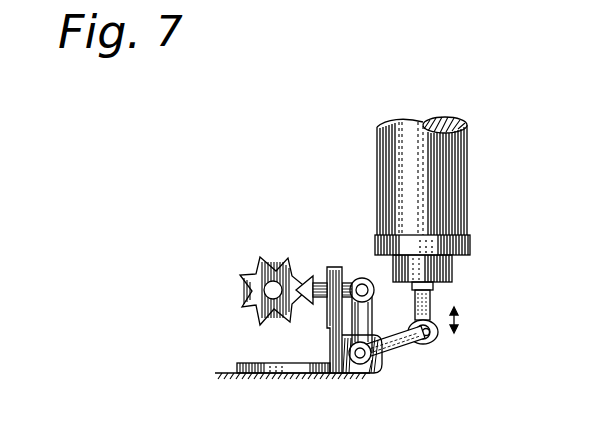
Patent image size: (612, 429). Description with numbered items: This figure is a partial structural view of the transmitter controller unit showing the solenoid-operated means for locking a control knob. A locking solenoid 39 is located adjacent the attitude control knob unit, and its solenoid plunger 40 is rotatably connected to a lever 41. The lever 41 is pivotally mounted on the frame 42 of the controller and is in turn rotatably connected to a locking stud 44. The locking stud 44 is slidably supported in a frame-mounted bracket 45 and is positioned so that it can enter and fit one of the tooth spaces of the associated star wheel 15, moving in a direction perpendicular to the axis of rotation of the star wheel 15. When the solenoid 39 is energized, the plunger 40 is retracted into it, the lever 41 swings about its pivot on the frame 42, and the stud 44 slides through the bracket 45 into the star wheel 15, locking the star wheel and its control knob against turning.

The star wheel 15 is at (265, 260).
The locking solenoid 39 is at (443, 207).
The solenoid plunger 40 is at (430, 303).
The lever 41 is at (371, 327).
The frame 42 is at (345, 380).
The locking stud 44 is at (317, 282).
The frame-mounted bracket 45 is at (293, 364).